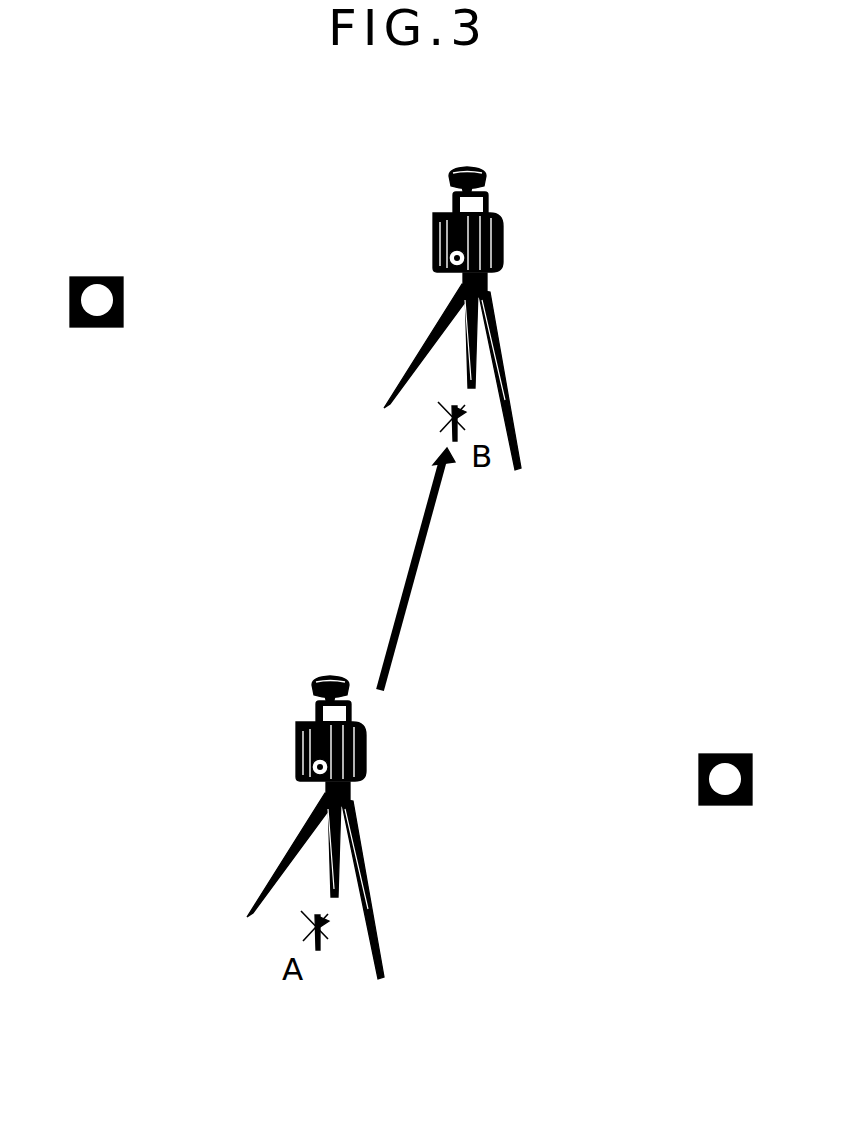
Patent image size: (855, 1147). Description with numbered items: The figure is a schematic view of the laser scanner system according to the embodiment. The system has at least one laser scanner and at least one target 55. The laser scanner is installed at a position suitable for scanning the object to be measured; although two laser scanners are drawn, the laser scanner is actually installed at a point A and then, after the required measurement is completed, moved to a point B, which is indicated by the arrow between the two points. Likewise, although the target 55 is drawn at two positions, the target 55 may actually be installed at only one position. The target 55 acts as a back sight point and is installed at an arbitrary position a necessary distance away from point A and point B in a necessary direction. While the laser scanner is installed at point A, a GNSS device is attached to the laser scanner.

The target 55 is at (112, 277).